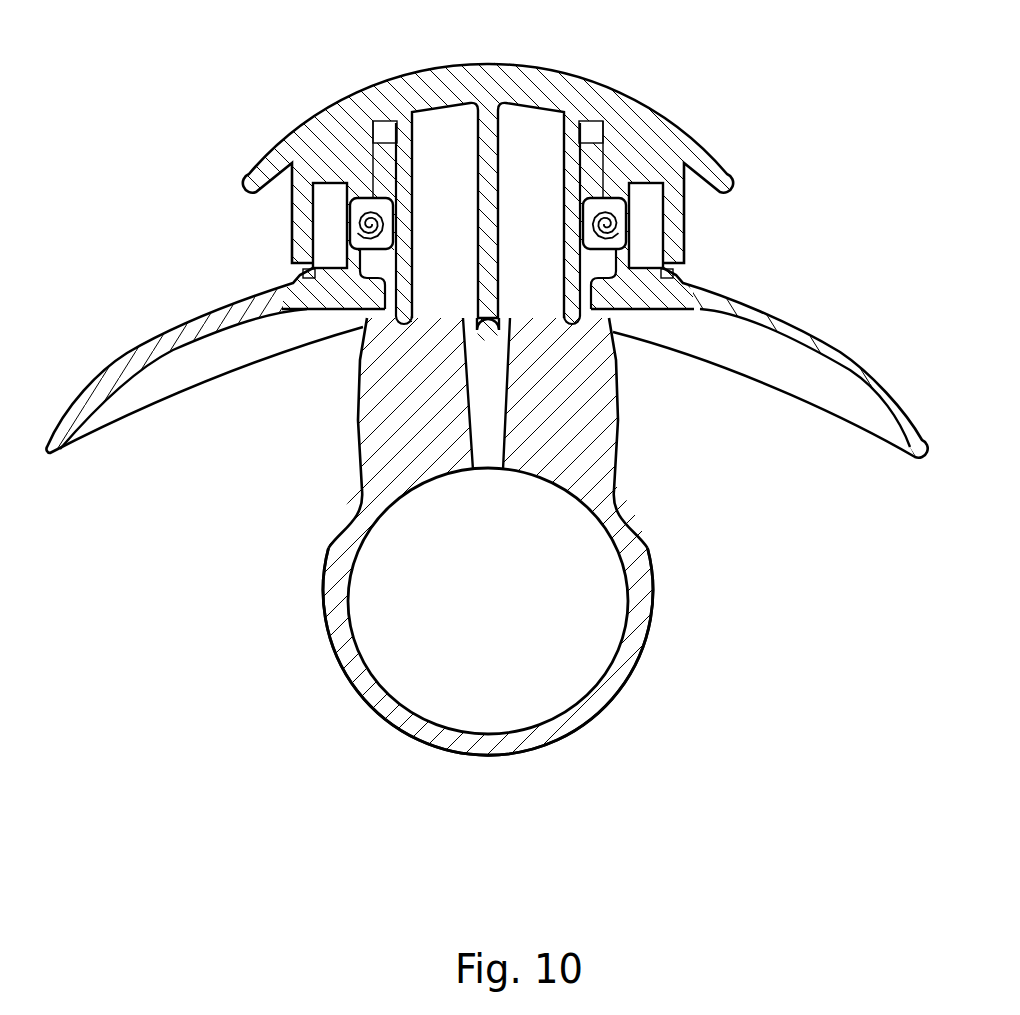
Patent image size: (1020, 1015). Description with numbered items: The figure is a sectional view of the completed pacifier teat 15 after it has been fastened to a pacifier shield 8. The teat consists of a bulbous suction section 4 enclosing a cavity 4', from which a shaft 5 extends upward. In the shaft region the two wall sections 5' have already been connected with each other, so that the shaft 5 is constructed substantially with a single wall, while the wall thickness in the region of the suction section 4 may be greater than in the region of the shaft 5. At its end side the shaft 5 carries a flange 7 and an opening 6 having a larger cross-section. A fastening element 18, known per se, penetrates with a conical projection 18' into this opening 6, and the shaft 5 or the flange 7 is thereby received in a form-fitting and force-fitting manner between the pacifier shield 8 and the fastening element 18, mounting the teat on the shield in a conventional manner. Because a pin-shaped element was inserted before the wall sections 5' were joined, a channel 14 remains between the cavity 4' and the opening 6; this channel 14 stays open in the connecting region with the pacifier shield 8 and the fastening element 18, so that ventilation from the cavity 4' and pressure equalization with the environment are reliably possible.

The suction section 4 is at (488, 557).
The bulbous cavity 4' is at (454, 601).
The shaft 5 is at (308, 433).
The wall sections 5' is at (625, 433).
The opening 6 is at (537, 167).
The flange 7 is at (607, 223).
The pacifier shield 8 is at (817, 357).
The channel 14 is at (488, 433).
The pacifier teat 15 is at (683, 645).
The fastening element 18 is at (497, 181).
The conical projection 18' is at (482, 284).